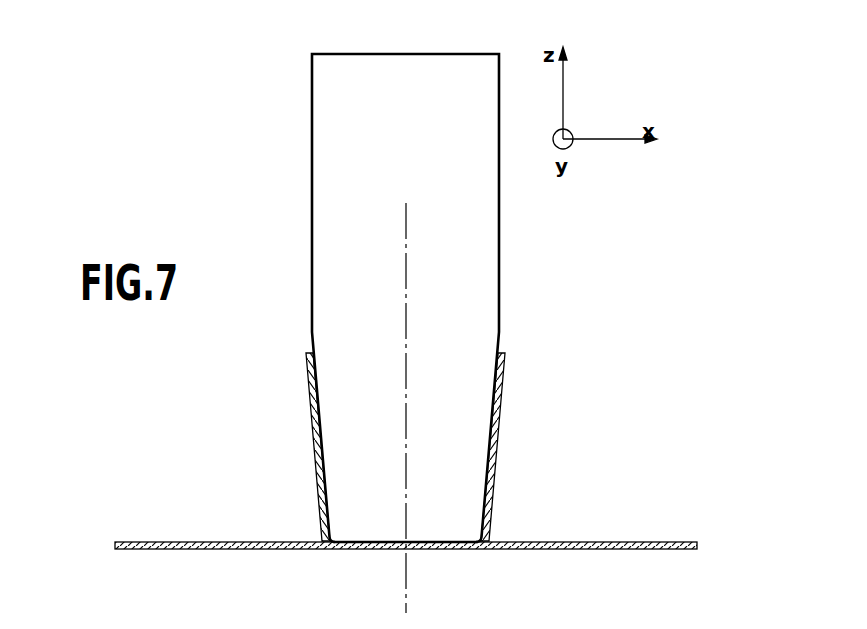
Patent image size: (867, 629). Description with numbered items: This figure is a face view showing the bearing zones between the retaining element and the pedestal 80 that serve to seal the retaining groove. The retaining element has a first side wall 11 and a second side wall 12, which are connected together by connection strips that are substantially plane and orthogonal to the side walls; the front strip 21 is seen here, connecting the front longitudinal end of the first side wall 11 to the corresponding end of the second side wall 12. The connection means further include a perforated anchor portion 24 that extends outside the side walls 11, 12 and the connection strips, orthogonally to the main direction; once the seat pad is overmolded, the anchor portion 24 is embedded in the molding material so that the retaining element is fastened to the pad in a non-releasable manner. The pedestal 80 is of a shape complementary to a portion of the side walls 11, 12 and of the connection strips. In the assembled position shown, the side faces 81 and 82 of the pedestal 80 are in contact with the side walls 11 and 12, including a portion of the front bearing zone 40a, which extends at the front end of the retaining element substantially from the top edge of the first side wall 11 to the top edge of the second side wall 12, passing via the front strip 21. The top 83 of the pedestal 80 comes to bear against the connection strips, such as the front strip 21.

The pedestal 80 is at (501, 229).
The side face of the pedestal 81 is at (309, 388).
The side face of the pedestal 82 is at (504, 390).
The first side wall 11 is at (310, 428).
The second side wall 12 is at (497, 436).
The front bearing zone 40a is at (326, 490).
The anchor portion 24 is at (185, 541).
The front strip 21 is at (358, 549).
The top of the pedestal 83 is at (462, 538).